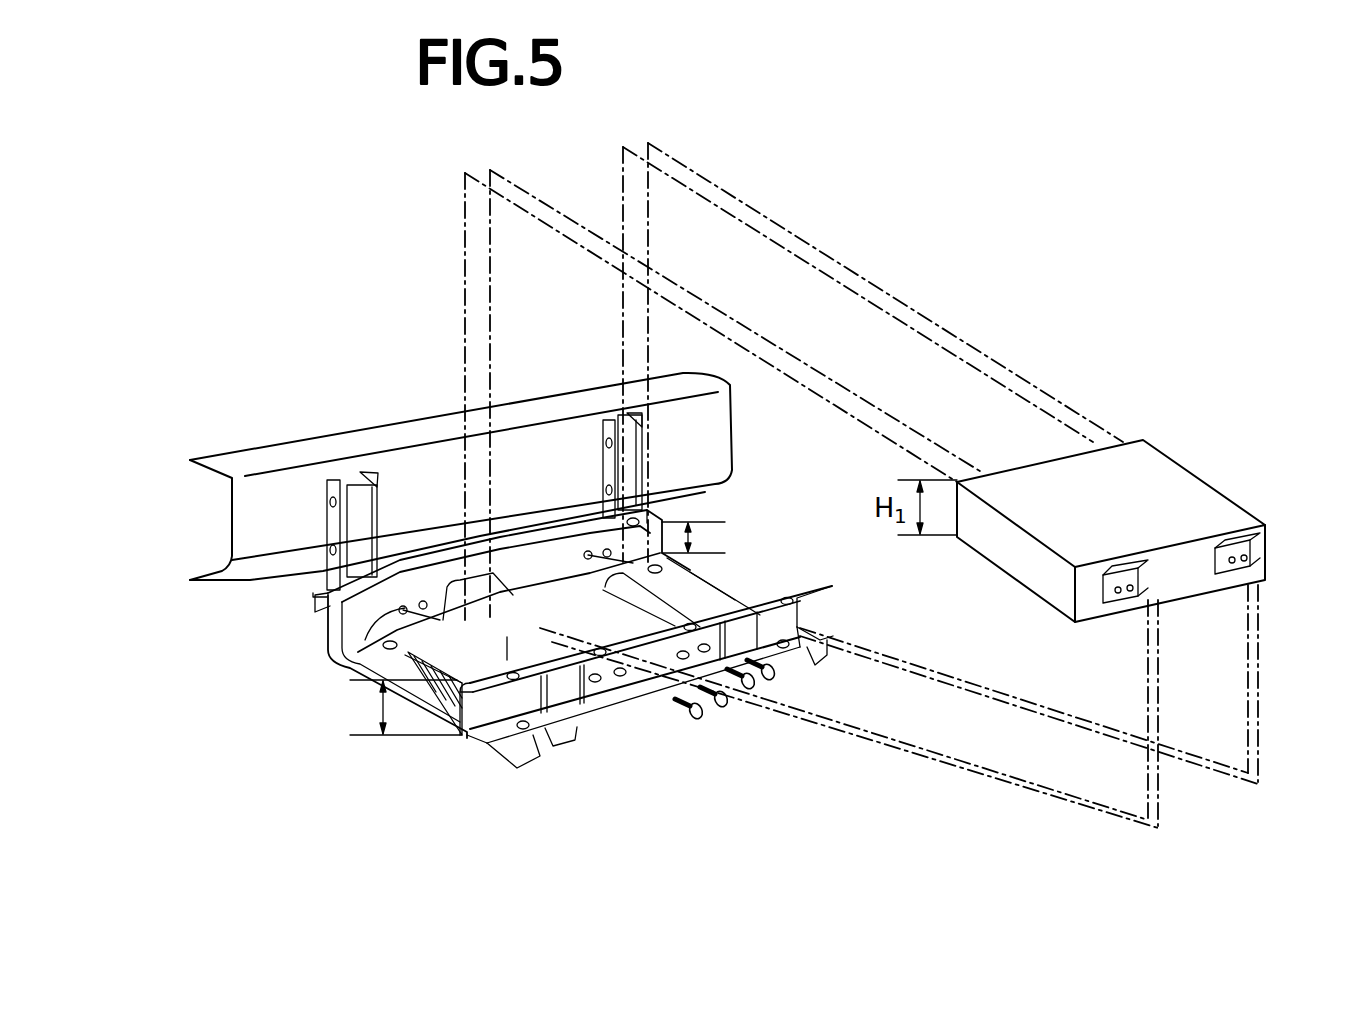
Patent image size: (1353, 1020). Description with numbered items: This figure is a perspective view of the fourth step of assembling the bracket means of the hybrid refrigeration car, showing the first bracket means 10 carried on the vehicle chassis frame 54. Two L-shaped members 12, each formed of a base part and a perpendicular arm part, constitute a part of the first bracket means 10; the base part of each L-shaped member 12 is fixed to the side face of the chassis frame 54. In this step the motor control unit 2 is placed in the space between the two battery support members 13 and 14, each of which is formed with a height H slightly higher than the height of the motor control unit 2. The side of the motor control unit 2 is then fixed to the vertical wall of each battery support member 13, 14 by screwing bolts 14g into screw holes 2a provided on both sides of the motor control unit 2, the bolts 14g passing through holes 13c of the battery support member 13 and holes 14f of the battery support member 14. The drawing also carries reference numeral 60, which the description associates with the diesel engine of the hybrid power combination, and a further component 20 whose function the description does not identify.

The motor control unit 2 is at (1145, 555).
The screw holes 2a is at (1110, 602).
The first bracket means 10 is at (515, 702).
The L-shaped member 12 is at (486, 639).
The battery support member 13 is at (557, 573).
The holes 13c is at (345, 664).
The battery support member 14 is at (646, 658).
The holes 14f is at (595, 683).
The bolts 14g is at (698, 722).
The support member 20 is at (405, 657).
The chassis frame 54 is at (383, 430).
The diesel engine 60 is at (507, 640).